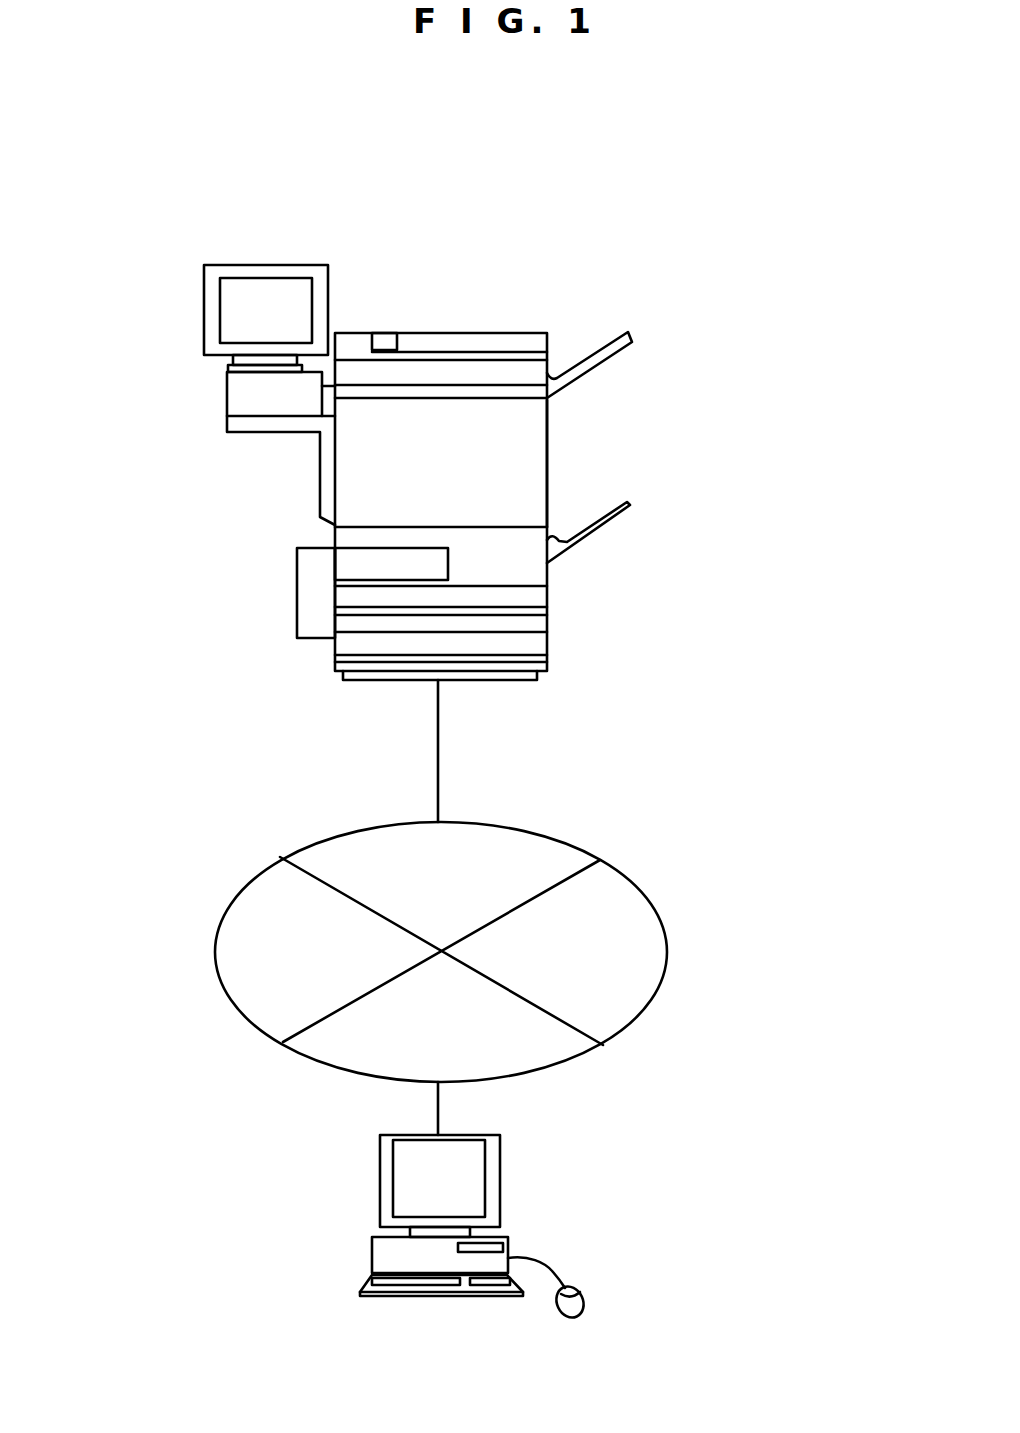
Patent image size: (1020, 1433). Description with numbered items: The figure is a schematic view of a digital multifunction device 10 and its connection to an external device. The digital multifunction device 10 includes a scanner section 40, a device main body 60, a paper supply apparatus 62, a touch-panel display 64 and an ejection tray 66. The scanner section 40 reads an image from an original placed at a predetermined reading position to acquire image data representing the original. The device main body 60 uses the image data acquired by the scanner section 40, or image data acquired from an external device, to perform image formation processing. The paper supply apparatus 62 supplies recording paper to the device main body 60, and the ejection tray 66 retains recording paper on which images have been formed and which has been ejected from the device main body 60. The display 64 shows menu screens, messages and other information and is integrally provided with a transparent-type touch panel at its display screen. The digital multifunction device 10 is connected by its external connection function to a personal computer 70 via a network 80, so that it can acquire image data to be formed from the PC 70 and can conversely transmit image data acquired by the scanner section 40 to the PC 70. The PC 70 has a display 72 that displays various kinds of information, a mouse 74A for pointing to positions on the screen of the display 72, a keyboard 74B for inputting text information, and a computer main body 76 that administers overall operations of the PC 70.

The digital multifunction device 10 is at (450, 213).
The scanner section 40 is at (533, 335).
The device main body 60 is at (547, 447).
The paper supply apparatus 62 is at (547, 595).
The touch-panel display 64 is at (204, 313).
The ejection tray 66 is at (630, 505).
The network 80 is at (633, 880).
The personal computer 70 is at (588, 1145).
The display 72 is at (500, 1202).
The computer main body 76 is at (508, 1247).
The mouse 74A is at (584, 1300).
The keyboard 74B is at (375, 1296).